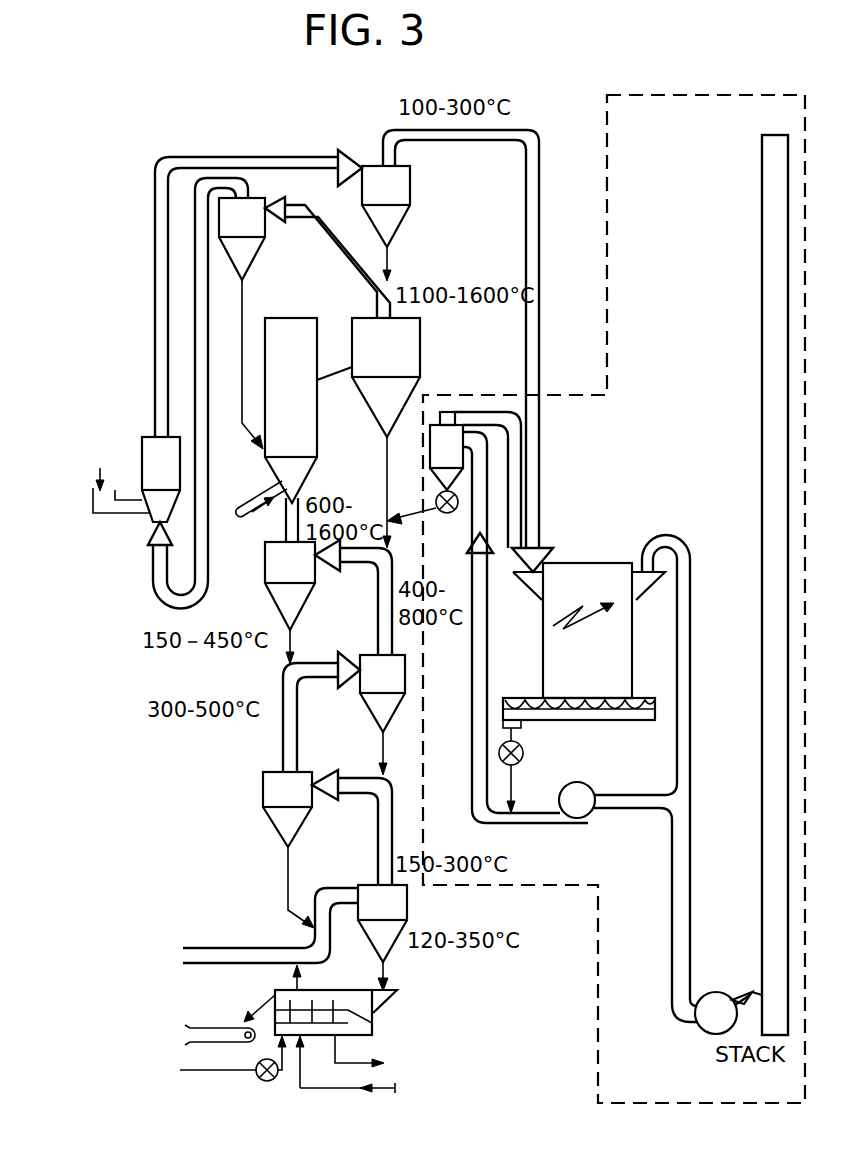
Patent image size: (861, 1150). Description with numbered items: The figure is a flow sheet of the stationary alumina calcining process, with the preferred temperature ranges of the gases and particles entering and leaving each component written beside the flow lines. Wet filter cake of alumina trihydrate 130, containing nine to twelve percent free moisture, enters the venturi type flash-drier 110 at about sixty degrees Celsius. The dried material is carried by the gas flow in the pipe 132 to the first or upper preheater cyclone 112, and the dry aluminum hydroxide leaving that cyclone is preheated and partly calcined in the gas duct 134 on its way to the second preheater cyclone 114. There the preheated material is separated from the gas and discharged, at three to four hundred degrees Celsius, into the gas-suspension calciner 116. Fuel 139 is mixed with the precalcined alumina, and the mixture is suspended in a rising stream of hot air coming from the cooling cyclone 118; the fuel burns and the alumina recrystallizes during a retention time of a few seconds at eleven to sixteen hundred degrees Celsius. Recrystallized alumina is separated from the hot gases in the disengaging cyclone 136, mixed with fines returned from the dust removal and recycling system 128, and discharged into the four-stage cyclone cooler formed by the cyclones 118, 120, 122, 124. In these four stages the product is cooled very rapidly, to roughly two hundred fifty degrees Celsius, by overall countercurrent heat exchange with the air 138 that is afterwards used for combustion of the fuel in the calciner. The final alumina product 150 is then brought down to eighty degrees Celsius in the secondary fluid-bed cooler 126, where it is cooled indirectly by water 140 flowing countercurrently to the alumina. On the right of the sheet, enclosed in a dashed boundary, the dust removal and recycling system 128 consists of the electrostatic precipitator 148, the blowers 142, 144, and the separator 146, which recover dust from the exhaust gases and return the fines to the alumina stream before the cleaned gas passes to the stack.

The venturi type flash-drier 110 is at (163, 479).
The first or upper preheater cyclone 112 is at (386, 223).
The second preheater cyclone 114 is at (242, 323).
The gas-suspension calciner 116 is at (308, 430).
The cooling cyclone 118 is at (290, 603).
The cooling cyclone 120 is at (382, 715).
The cooling cyclone 122 is at (288, 850).
The cooling cyclone 124 is at (382, 938).
The secondary fluid-bed cooler 126 is at (375, 1023).
The dust removal and recycling system 128 is at (614, 599).
The wet filter cake (alumina trihydrate) 130 is at (100, 438).
The pipe 132 is at (155, 255).
The gas duct 134 is at (343, 255).
The disengaging cyclone 136 is at (386, 433).
The air 138 is at (198, 946).
The fuel 139 is at (236, 504).
The water 140 is at (440, 1080).
The blower 142 is at (715, 994).
The blower 144 is at (588, 784).
The separator 146 is at (454, 480).
The electrostatic precipitator 148 is at (582, 688).
The final alumina product 150 is at (168, 1008).